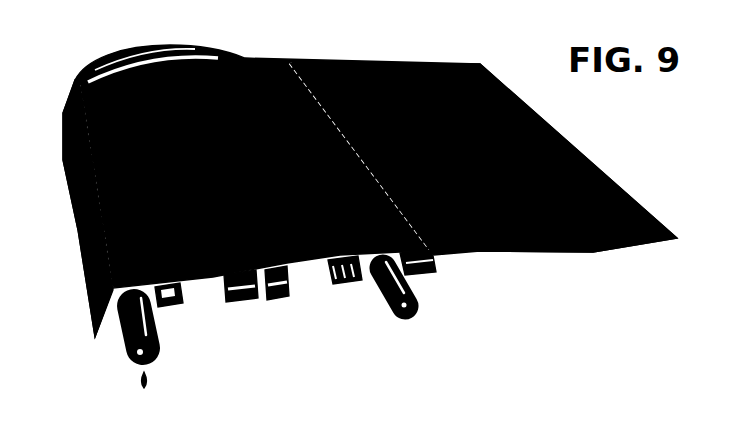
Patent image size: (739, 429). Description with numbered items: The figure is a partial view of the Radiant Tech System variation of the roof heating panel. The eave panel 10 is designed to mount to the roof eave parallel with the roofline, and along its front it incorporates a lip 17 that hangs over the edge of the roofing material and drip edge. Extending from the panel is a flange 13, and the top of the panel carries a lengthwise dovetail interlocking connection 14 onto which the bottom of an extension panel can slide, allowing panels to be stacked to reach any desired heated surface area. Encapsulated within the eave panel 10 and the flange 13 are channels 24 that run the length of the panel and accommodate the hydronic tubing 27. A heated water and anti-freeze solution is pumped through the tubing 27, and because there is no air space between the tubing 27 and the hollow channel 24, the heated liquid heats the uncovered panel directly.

The eave panel 10 is at (293, 261).
The flange 13 is at (517, 251).
The dovetail interlocking connection 14 is at (413, 252).
The front lip 17 is at (93, 329).
The encapsulated channel 24 is at (152, 300).
The hydronic tubing 27 is at (157, 352).